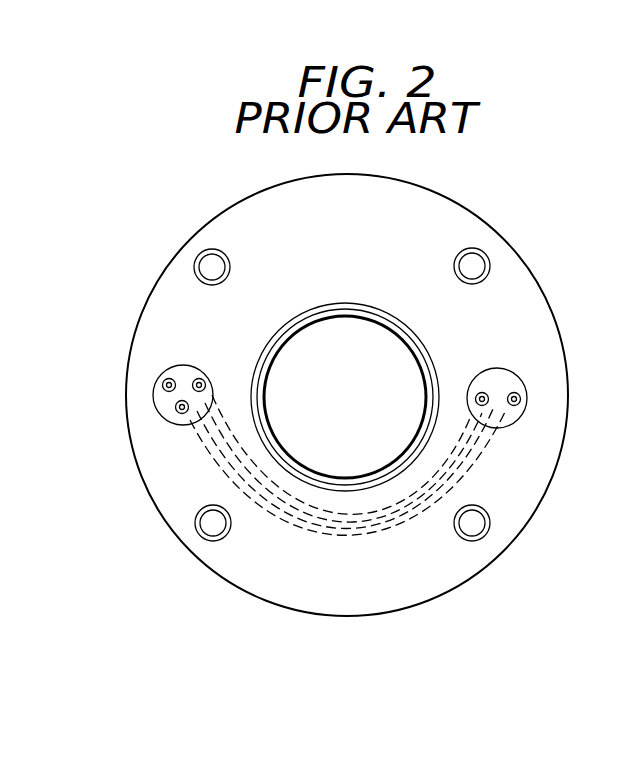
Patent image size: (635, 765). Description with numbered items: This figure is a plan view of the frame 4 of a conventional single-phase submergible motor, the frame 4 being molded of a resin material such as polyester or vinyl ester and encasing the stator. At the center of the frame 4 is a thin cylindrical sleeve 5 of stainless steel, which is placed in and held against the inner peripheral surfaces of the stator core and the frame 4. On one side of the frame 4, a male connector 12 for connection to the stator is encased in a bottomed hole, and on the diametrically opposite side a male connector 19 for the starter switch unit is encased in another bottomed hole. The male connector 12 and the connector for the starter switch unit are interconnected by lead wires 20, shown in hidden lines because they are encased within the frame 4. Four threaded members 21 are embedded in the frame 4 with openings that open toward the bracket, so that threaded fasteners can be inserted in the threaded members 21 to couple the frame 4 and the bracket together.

The frame 4 is at (548, 313).
The cylindrical sleeve 5 is at (336, 317).
The male connector 12 is at (157, 409).
The male connector 19 is at (527, 393).
The lead wires 20 is at (379, 533).
The threaded members 21 is at (200, 254).